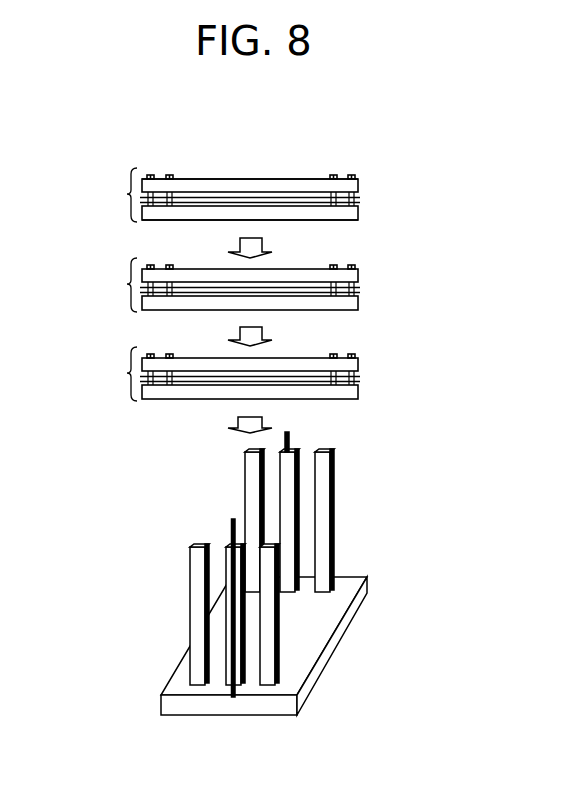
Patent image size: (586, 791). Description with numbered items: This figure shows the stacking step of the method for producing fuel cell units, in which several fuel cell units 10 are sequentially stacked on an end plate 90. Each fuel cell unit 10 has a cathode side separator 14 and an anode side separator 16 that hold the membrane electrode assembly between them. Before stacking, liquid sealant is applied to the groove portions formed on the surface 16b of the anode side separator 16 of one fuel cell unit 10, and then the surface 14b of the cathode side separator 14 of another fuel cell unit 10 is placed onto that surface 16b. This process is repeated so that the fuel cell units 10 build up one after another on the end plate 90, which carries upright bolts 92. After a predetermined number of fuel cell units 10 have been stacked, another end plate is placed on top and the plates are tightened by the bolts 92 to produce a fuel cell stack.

The fuel cell unit 10 is at (256, 262).
The cathode side separator 14 is at (337, 215).
The surface of the cathode side separator 14b is at (322, 221).
The anode side separator 16 is at (337, 188).
The surface of the anode side separator 16b is at (302, 179).
The end plate 90 is at (323, 658).
The bolts 92 is at (290, 437).